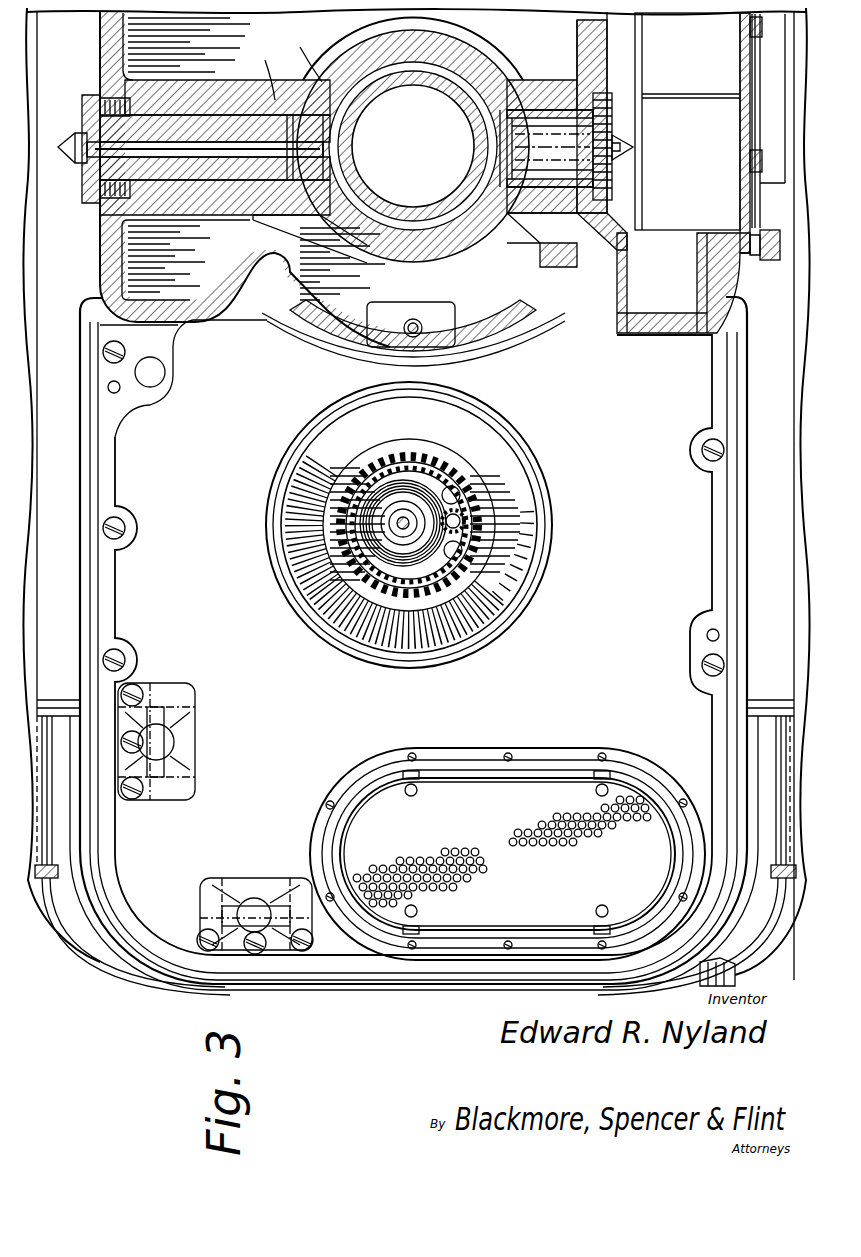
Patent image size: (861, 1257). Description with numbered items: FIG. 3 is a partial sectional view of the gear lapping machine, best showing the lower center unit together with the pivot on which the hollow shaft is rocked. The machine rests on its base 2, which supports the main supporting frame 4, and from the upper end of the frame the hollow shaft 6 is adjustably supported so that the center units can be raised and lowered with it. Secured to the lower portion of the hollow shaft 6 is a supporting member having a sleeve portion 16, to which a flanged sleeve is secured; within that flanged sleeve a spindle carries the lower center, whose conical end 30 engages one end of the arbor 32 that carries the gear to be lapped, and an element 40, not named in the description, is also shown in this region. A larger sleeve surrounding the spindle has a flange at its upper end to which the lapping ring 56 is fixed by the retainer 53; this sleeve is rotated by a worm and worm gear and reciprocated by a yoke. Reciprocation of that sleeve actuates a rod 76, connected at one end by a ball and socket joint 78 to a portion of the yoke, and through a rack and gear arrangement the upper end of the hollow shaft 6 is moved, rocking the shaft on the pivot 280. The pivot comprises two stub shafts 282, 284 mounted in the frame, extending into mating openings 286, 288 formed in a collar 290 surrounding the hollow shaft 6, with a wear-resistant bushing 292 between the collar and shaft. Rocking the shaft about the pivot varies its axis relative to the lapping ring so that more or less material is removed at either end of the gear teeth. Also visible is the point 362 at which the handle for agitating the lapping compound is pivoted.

The base of the machine 2 is at (100, 962).
The main supporting frame 4 is at (107, 252).
The hollow shaft 6 is at (375, 93).
The sleeve portion 16 is at (460, 486).
The conical end 30 is at (395, 518).
The arbor 32 is at (434, 478).
The hub 40 is at (402, 485).
The retainer 53 is at (368, 638).
The lapping ring 56 is at (328, 520).
The rod 76 is at (405, 320).
The ball and socket joint 78 is at (418, 322).
The pivot 280 is at (612, 200).
The stub shaft 282 is at (82, 137).
The stub shaft 284 is at (560, 125).
The mating opening 286 is at (259, 62).
The mating opening 288 is at (530, 112).
The collar 290 is at (357, 62).
The bushing 292 is at (300, 47).
The pivot of handle 362 is at (735, 970).